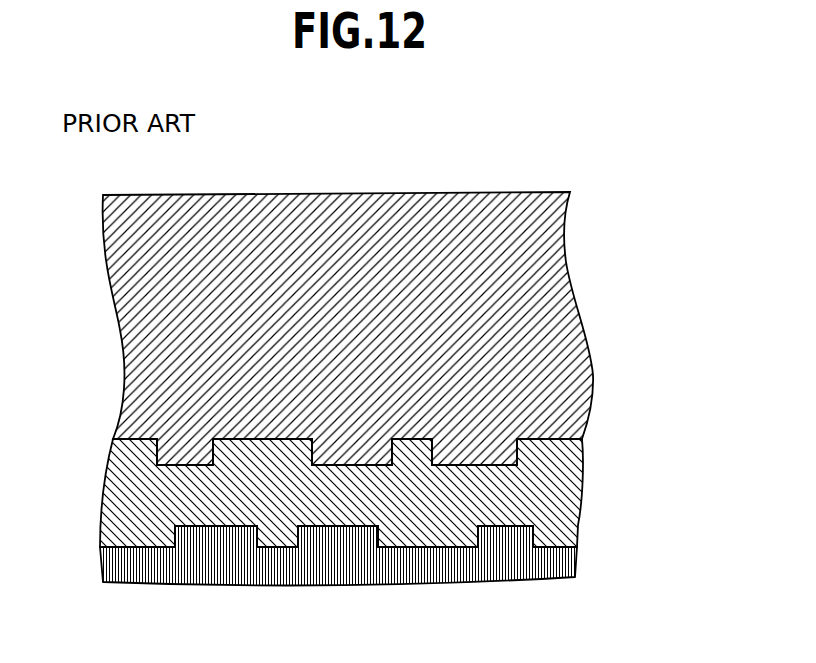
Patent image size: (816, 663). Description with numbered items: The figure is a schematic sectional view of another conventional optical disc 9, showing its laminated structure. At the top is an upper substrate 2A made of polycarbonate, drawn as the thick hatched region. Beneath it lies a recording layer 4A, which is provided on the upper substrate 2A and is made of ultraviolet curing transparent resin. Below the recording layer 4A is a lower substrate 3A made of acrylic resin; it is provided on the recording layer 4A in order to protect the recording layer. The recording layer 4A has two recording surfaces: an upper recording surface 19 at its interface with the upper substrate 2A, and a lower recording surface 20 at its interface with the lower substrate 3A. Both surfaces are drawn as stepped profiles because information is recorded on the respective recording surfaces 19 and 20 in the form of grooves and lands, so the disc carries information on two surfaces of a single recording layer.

The optical disc 9 is at (538, 163).
The upper substrate 2A is at (565, 316).
The recording layer 4A is at (562, 479).
The upper recording surface 19 is at (550, 438).
The lower substrate 3A is at (543, 568).
The lower recording surface 20 is at (553, 529).